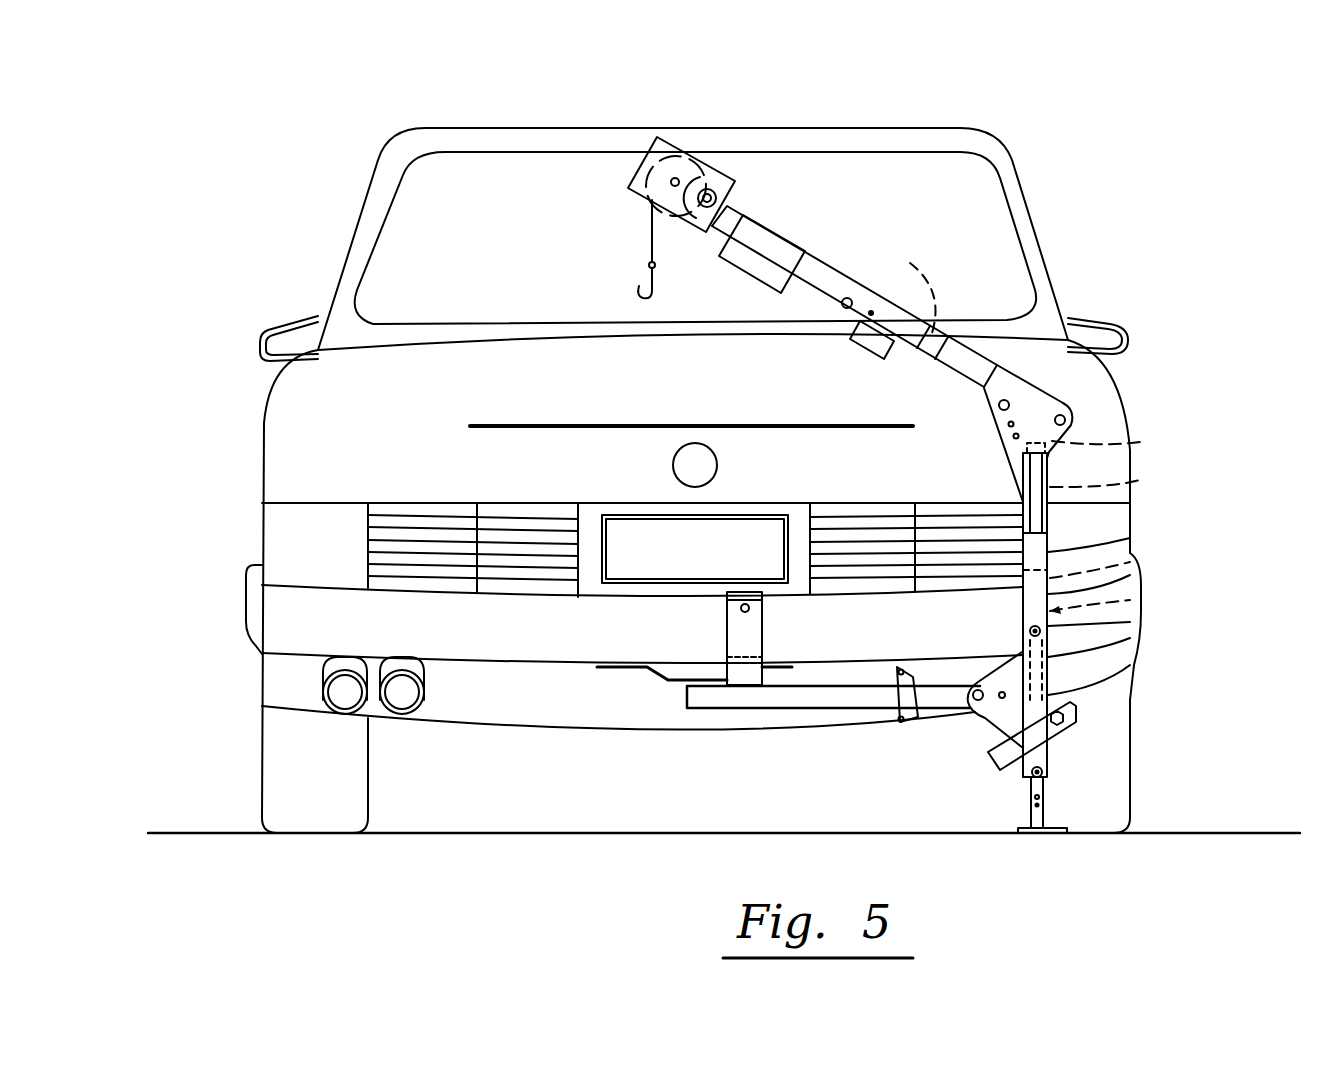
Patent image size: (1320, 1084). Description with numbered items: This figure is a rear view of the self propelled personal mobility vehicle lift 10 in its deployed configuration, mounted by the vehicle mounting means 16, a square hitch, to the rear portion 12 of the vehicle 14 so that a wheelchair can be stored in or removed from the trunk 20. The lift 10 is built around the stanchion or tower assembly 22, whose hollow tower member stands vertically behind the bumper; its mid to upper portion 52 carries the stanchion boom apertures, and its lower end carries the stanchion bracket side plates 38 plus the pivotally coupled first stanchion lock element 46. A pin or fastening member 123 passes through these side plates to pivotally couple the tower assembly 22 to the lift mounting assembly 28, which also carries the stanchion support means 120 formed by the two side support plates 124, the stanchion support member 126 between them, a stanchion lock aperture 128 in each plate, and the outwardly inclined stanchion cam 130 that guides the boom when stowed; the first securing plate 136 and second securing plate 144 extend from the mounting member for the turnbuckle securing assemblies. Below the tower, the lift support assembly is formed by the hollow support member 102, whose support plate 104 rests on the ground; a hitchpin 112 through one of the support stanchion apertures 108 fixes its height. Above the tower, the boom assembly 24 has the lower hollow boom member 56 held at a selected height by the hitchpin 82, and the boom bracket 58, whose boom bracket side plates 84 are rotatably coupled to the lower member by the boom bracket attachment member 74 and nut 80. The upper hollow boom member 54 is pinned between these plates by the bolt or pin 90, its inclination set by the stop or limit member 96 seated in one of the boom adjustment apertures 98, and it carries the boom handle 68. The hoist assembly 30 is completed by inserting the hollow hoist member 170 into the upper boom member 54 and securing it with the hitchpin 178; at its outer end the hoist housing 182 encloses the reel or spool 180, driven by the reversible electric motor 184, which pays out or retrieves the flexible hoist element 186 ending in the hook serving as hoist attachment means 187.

The self propelled personal mobility vehicle lift 10 is at (900, 458).
The rear portion 12 is at (648, 404).
The vehicle 14 is at (350, 142).
The vehicle mounting means 16 is at (687, 693).
The trunk 20 is at (352, 427).
The stanchion or tower assembly 22 is at (1130, 600).
The boom assembly 24 is at (1063, 548).
The lift mounting assembly 28 is at (753, 723).
The hoist assembly 30 is at (781, 239).
The stanchion bracket side plates 38 is at (1052, 692).
The first stanchion lock element 46 is at (1063, 737).
The mid to upper portion 52 is at (1130, 562).
The upper hollow boom member 54 is at (827, 310).
The lower hollow boom member 56 is at (1050, 553).
The boom bracket 58 is at (1043, 393).
The boom handle 68 is at (889, 357).
The boom bracket attachment member 74 is at (1140, 480).
The nut 80 is at (1140, 442).
The hitchpin 82 is at (1052, 631).
The boom bracket side plates 84 is at (1015, 460).
The bolt or pin 90 is at (1072, 418).
The stop or limit member 96 is at (999, 405).
The boom adjustment apertures 98 is at (1013, 436).
The hollow support member 102 is at (1044, 821).
The support plate 104 is at (1012, 829).
The support stanchion apertures 108 is at (1044, 802).
The hitchpin 112 is at (1030, 772).
The stanchion support means 120 is at (808, 663).
The pin or fastening member 123 is at (995, 666).
The side support plates 124 is at (760, 632).
The stanchion support member 126 is at (762, 661).
The stanchion lock aperture 128 is at (741, 609).
The stanchion cam 130 is at (750, 592).
The first securing plate 136 is at (906, 667).
The second securing plate 144 is at (909, 724).
The hollow hoist member 170 is at (898, 292).
The hitchpin 178 is at (843, 313).
The reel or spool 180 is at (648, 182).
The hoist housing 182 is at (657, 135).
The reversible electric motor 184 is at (772, 228).
The flexible hoist element 186 is at (650, 238).
The hoist attachment means 187 is at (646, 283).